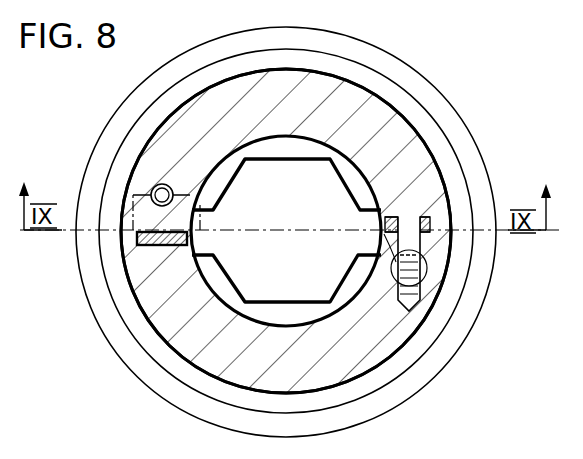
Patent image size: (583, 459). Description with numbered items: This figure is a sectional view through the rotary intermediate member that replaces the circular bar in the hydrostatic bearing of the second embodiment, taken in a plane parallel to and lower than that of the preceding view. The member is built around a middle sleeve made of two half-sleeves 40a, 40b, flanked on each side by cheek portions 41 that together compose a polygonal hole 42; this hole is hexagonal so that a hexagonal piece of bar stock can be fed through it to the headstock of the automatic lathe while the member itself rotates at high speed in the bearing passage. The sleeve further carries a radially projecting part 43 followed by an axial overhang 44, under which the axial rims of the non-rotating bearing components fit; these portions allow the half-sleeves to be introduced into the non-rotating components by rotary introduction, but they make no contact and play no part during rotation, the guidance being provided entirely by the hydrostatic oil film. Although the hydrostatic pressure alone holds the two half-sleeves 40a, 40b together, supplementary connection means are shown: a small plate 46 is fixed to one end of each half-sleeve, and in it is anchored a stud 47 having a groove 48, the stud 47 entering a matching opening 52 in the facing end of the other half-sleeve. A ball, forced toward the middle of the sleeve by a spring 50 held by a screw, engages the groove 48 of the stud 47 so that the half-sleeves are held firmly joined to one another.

The half-sleeve 40a is at (400, 137).
The half-sleeve 40b is at (407, 318).
The cheek portion 41 is at (382, 387).
The polygonal hole 42 is at (236, 183).
The radially projecting part 43 is at (168, 363).
The axial overhang 44 is at (130, 347).
The small plate 46 is at (134, 240).
The stud 47 is at (428, 236).
The groove 48 is at (286, 231).
The spring 50 is at (160, 184).
The matching opening 52 is at (421, 300).